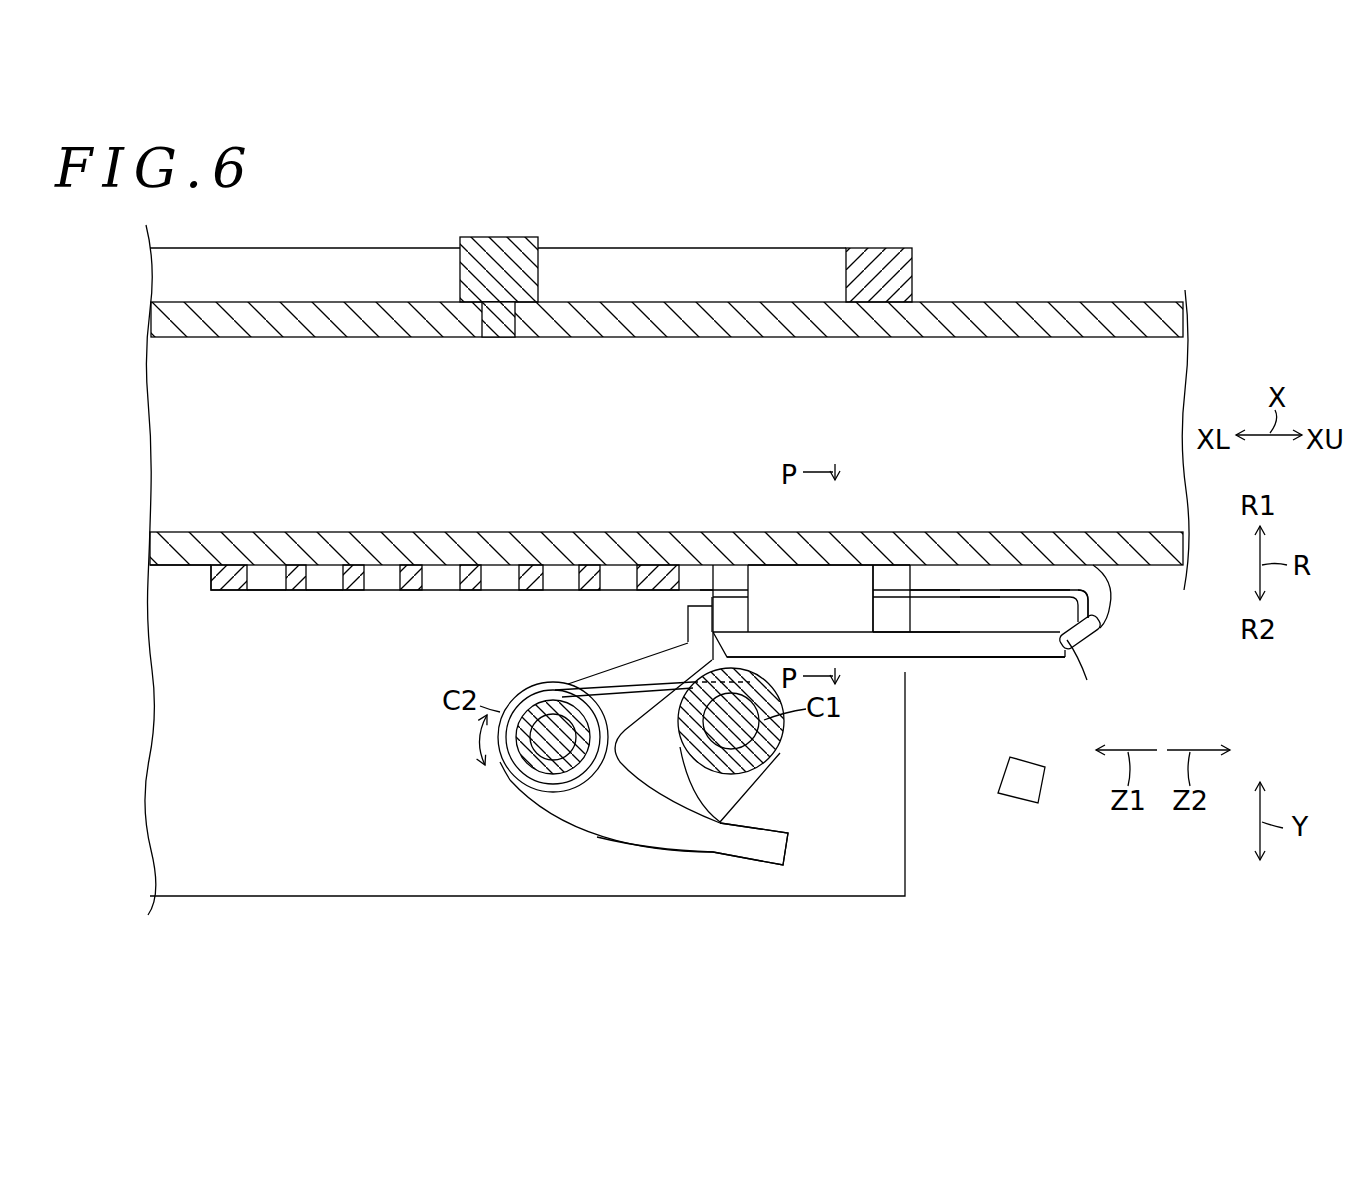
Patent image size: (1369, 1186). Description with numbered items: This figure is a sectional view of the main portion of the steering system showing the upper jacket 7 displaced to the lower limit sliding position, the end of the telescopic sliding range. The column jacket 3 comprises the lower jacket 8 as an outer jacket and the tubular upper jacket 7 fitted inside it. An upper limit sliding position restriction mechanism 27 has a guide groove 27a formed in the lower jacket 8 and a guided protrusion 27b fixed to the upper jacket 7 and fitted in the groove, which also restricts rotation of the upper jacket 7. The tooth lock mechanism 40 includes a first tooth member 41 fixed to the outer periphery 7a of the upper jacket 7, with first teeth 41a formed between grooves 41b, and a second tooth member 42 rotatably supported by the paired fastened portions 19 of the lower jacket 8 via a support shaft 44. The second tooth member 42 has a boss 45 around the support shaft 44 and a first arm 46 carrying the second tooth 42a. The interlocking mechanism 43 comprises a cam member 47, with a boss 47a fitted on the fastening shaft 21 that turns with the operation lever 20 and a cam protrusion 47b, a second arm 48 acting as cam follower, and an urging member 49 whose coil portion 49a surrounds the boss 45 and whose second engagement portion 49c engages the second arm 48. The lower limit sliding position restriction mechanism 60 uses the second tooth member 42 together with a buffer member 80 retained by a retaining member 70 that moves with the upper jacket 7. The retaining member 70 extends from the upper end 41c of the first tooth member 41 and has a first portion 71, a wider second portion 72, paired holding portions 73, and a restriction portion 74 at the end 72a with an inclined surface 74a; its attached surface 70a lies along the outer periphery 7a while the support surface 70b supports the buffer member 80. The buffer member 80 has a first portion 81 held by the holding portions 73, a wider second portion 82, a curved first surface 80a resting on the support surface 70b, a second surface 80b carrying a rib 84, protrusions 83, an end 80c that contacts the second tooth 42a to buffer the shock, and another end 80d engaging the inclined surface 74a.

The column jacket 3 is at (940, 228).
The upper jacket 7 is at (1080, 300).
The outer periphery of the upper jacket 7a is at (180, 567).
The lower jacket 8 is at (880, 248).
The fastened portions 19 is at (300, 877).
The operation lever 20 is at (1018, 790).
The fastening shaft 21 is at (772, 747).
The upper limit sliding position restriction mechanism 27 is at (498, 241).
The guide groove 27a is at (568, 262).
The guided protrusion 27b is at (499, 261).
The tooth lock mechanism 40 is at (639, 808).
The first tooth member 41 is at (462, 572).
The first teeth 41a is at (353, 576).
The grooves 41b is at (380, 585).
The upper end of the first tooth member 41c is at (650, 562).
The second tooth member 42 is at (528, 688).
The second tooth 42a is at (686, 622).
The interlocking mechanism 43 is at (639, 827).
The support shaft 44 is at (533, 773).
The boss 45 is at (522, 790).
The first arm 46 is at (618, 668).
The cam member 47 is at (770, 811).
The boss of the cam member 47a is at (785, 752).
The cam protrusion 47b is at (748, 798).
The second arm 48 is at (704, 838).
The urging member 49 is at (601, 807).
The coil portion 49a is at (512, 773).
The second engagement portion 49c is at (600, 840).
The lower limit sliding position restriction mechanism 60 is at (870, 668).
The retaining member 70 is at (944, 585).
The attached surface 70a is at (926, 585).
The support surface 70b is at (998, 634).
The first portion of the retaining member 71 is at (882, 575).
The second portion of the retaining member 72 is at (1008, 534).
The end of the second portion 72a is at (1095, 600).
The holding portions 73 is at (815, 580).
The restriction portion 74 is at (1118, 639).
The inclined surface 74a is at (1095, 676).
The buffer member 80 is at (950, 617).
The first surface 80a is at (1070, 590).
The second surface 80b is at (1035, 634).
The end of the buffer member 80c is at (713, 600).
The other end of the buffer member 80d is at (1090, 634).
The first portion of the buffer member 81 is at (728, 610).
The second portion of the buffer member 82 is at (957, 582).
The protrusions 83 is at (990, 605).
The rib 84 is at (935, 650).